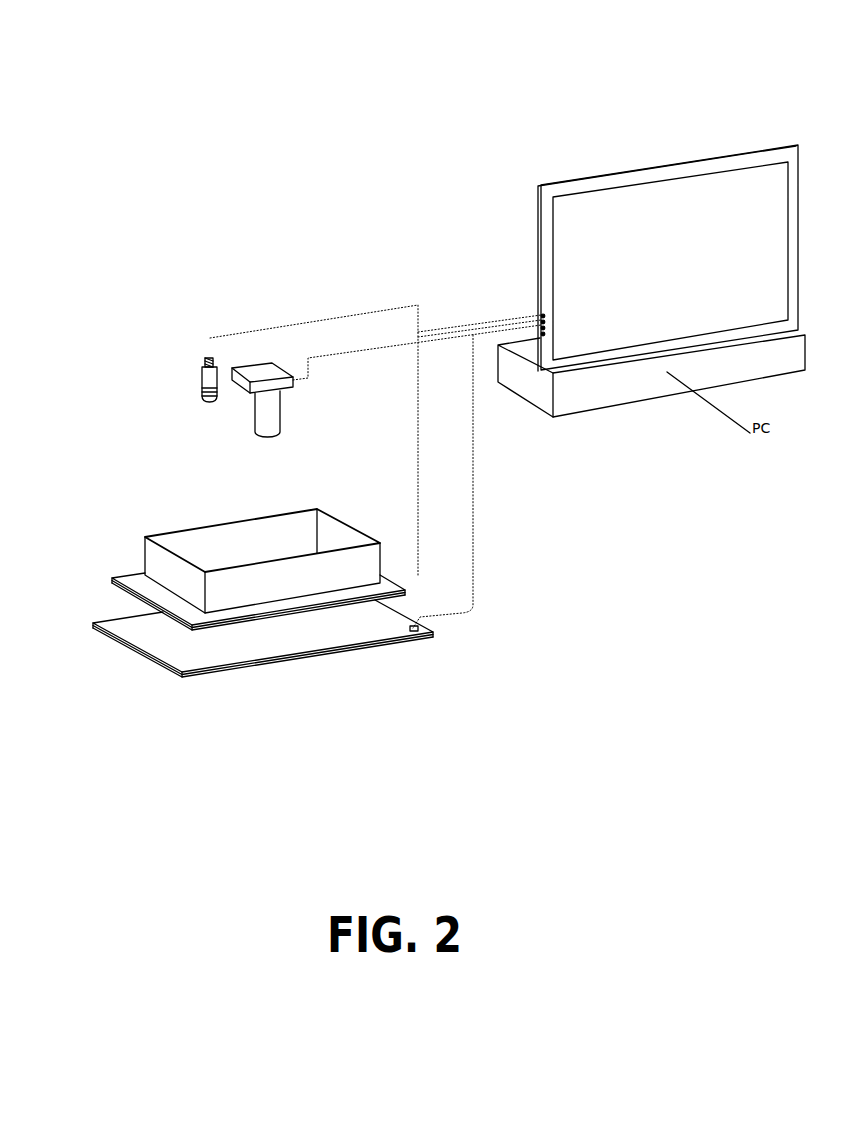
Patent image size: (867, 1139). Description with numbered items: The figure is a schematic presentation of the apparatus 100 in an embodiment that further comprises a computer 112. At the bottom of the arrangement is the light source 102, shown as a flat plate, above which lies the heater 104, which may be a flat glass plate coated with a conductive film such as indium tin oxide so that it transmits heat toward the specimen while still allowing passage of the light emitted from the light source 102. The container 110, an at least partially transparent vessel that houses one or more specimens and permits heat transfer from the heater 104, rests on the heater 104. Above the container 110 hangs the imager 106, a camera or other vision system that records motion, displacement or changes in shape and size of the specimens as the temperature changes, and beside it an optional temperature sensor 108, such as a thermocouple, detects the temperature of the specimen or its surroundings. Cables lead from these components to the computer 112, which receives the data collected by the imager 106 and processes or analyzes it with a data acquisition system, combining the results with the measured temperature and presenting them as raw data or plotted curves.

The apparatus 100 is at (667, 55).
The light source 102 is at (350, 627).
The heater 104 is at (388, 585).
The imager 106 is at (267, 370).
The temperature sensor 108 is at (210, 353).
The container 110 is at (288, 528).
The computer 112 is at (668, 258).